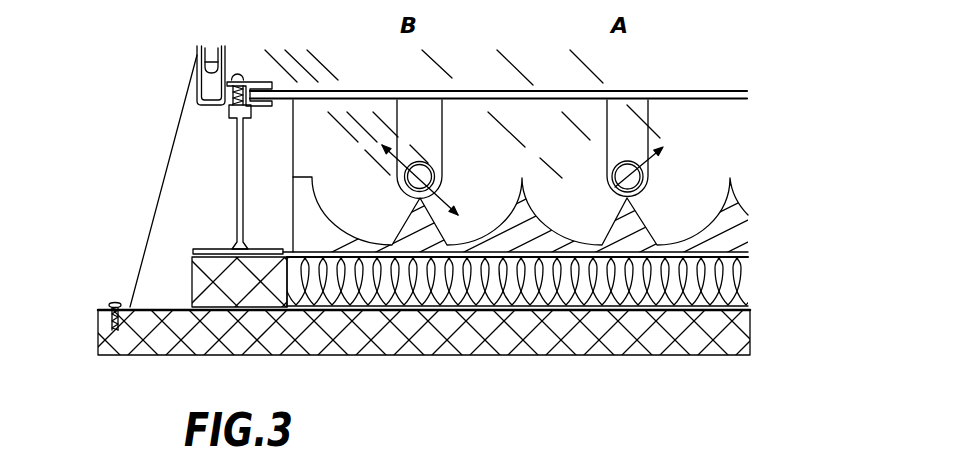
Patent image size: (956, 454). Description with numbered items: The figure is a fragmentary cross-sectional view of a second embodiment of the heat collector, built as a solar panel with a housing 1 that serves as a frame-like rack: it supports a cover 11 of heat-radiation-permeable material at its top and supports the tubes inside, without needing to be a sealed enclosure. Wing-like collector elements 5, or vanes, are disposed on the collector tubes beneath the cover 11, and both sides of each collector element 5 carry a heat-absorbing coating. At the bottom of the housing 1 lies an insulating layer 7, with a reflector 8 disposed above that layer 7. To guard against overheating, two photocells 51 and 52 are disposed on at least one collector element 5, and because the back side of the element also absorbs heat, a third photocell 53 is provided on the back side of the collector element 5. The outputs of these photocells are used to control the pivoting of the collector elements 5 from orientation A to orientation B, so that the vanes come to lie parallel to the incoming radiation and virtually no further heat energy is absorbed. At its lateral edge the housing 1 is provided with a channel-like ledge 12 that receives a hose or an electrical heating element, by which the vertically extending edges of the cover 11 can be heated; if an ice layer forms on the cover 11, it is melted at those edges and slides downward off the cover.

The housing 1 is at (158, 173).
The collector element 5 is at (656, 168).
The insulating layer 7 is at (722, 277).
The reflector 8 is at (707, 214).
The cover 11 is at (717, 91).
The channel-like ledge 12 is at (198, 72).
The photocell 51 is at (662, 142).
The photocell 52 is at (592, 210).
The third photocell 53 is at (665, 147).